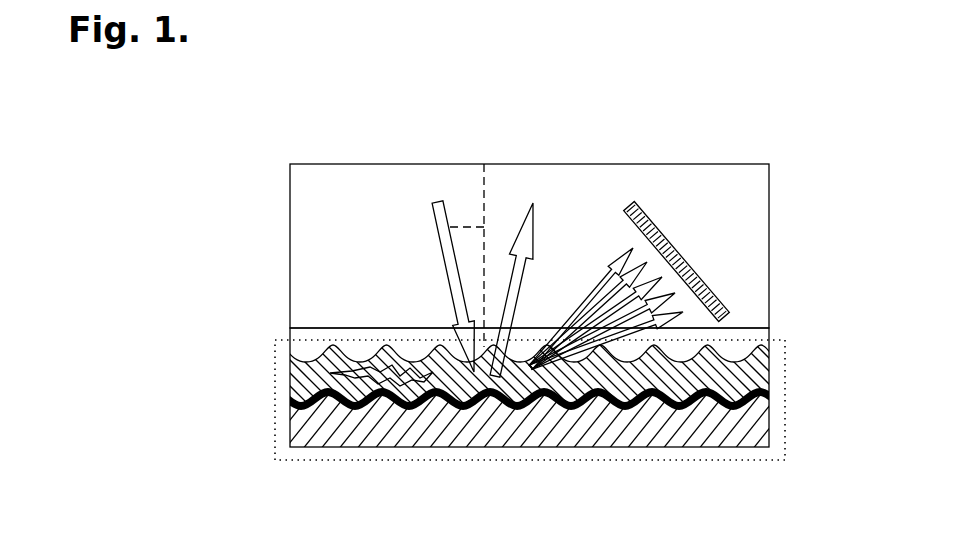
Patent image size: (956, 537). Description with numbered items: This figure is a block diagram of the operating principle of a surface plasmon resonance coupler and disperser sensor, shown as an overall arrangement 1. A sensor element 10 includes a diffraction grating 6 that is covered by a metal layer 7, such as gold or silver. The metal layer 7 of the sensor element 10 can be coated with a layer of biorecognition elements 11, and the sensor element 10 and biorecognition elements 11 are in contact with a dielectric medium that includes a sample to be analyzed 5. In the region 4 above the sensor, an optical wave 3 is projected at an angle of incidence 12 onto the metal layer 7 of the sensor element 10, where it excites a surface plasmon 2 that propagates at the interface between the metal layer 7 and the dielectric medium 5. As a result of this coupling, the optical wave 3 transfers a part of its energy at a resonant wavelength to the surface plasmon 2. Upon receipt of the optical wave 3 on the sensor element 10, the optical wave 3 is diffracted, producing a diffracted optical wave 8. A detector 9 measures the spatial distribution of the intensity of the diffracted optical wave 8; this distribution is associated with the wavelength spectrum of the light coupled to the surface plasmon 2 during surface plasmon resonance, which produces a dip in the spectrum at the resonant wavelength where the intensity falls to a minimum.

The inspection arrangement 1 is at (191, 79).
The surface plasmon 2 is at (370, 358).
The optical wave 3 is at (442, 200).
The air space 4 is at (378, 190).
The sample to be analyzed 5 is at (743, 345).
The diffraction grating 6 is at (330, 435).
The metal layer 7 is at (763, 380).
The diffracted optical wave 8 is at (581, 328).
The detector 9 is at (717, 287).
The sensor element 10 is at (275, 406).
The layer of biorecognition elements 11 is at (292, 367).
The angle of incidence 12 is at (462, 227).